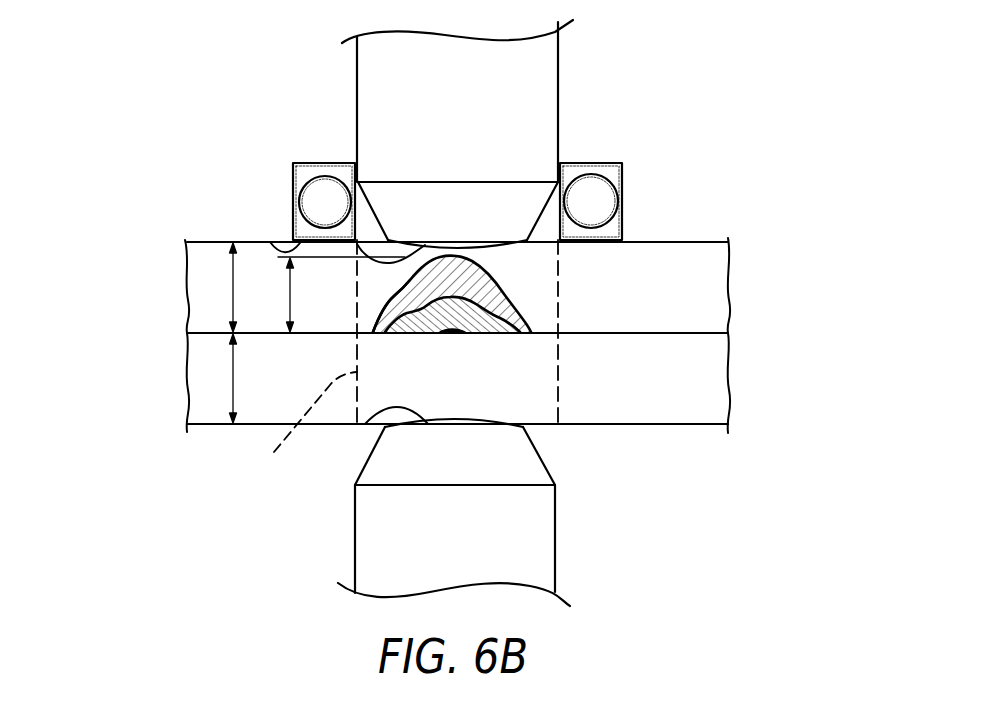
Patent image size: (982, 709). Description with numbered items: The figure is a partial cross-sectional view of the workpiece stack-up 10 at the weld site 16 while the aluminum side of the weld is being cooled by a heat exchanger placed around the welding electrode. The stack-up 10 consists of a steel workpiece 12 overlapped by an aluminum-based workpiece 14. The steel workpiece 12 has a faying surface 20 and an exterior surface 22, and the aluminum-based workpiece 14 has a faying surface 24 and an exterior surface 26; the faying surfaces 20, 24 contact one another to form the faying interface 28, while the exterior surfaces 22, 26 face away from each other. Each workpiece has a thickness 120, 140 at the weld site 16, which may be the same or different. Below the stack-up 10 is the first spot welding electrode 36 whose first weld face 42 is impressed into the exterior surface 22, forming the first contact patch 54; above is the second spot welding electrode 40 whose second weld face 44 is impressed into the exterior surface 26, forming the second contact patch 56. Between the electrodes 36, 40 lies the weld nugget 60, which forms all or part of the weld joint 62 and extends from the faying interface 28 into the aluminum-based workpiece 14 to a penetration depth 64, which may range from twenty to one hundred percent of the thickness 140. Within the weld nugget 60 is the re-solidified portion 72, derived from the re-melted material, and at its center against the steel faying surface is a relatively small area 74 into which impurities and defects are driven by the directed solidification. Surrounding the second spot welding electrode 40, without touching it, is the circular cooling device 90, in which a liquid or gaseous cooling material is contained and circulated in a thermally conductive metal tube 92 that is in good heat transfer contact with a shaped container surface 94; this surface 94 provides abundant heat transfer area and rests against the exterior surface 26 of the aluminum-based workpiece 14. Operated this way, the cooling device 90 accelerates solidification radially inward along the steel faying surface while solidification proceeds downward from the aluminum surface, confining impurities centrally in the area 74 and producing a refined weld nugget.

The workpiece stack-up 10 is at (386, 335).
The steel workpiece 12 is at (187, 378).
The aluminum-based workpiece 14 is at (187, 292).
The weld site 16 is at (302, 421).
The faying surface 20 is at (703, 333).
The exterior surface 22 is at (682, 425).
The faying surface 24 is at (683, 334).
The exterior surface 26 is at (683, 242).
The faying interface 28 is at (540, 332).
The first spot welding electrode 36 is at (497, 512).
The second spot welding electrode 40 is at (509, 134).
The first weld face 42 is at (380, 426).
The second weld face 44 is at (357, 244).
The first contact patch 54 is at (490, 427).
The second contact patch 56 is at (490, 243).
The weld nugget 60 is at (433, 282).
The weld joint 62 is at (515, 272).
The penetration depth 64 is at (340, 294).
The re-solidified portion 72 is at (480, 322).
The area of confined impurities 74 is at (450, 335).
The circular cooling device 90 is at (411, 165).
The thermally conductive metal tube 92 is at (325, 193).
The shaped container surface 94 is at (270, 242).
The thickness of steel workpiece 120 is at (232, 378).
The thickness of aluminum-based workpiece 140 is at (232, 287).